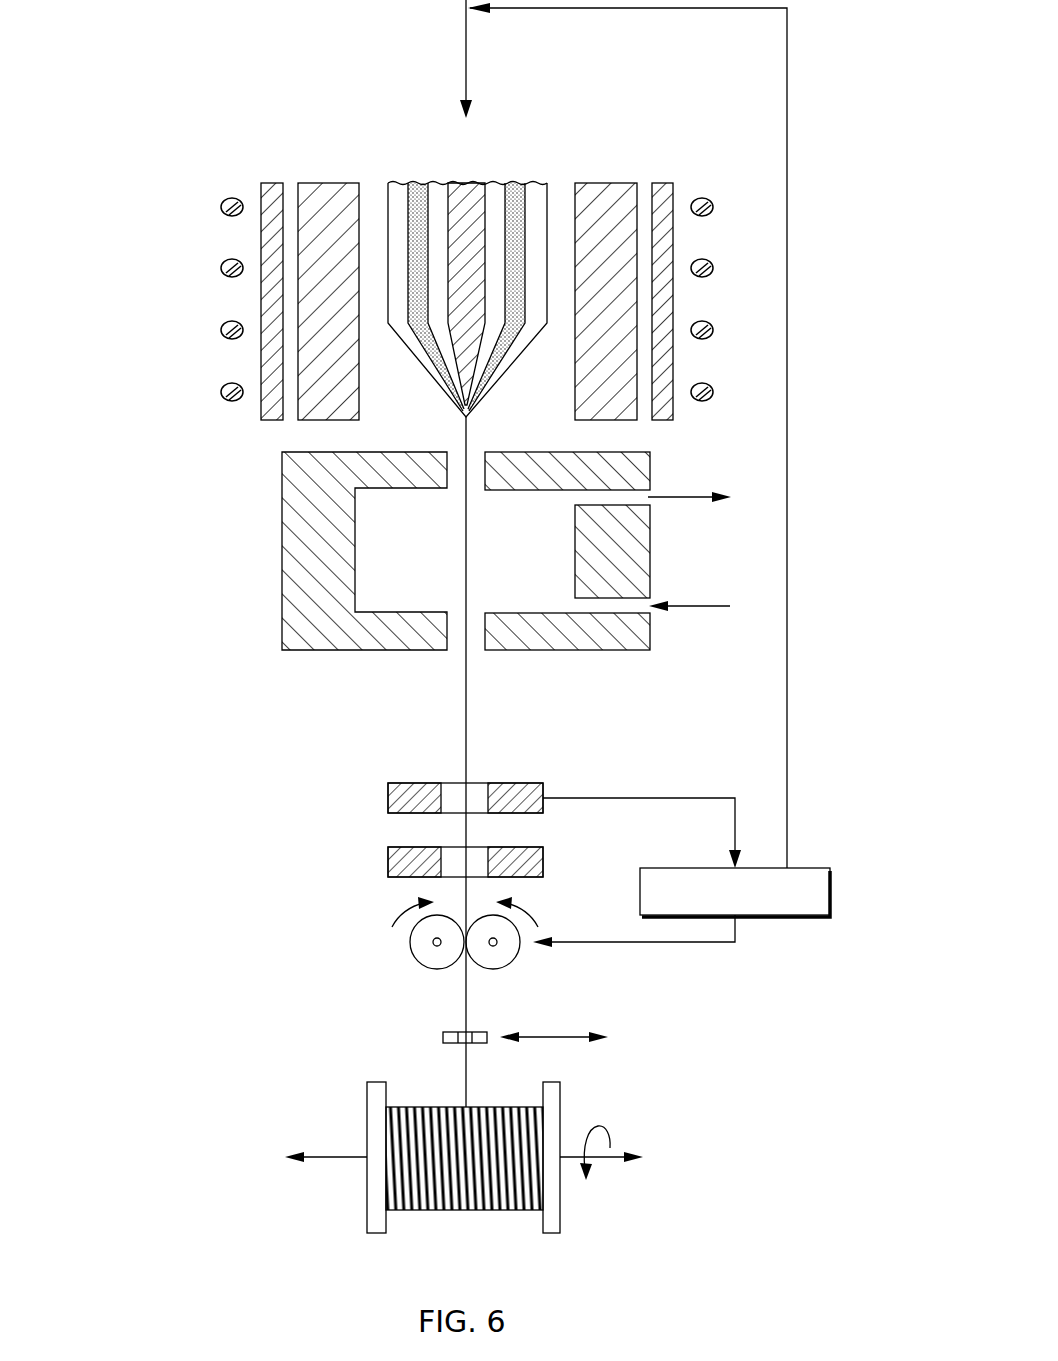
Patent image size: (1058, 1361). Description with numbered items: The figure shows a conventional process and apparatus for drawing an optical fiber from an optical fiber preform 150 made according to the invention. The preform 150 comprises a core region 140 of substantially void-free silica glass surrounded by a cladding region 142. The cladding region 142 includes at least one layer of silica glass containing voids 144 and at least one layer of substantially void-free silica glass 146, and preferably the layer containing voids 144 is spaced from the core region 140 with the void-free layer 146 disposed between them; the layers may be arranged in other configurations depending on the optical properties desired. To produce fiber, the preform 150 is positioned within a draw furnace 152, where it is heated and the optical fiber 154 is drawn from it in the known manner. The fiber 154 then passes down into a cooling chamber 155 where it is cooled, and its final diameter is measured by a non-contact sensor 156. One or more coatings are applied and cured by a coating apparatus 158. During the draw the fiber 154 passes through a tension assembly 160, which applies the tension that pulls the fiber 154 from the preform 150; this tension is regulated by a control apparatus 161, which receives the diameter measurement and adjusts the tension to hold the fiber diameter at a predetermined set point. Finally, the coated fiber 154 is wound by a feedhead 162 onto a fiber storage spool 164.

The core region 140 is at (466, 183).
The cladding region 142 is at (453, 170).
The layer of silica glass containing voids 144 is at (520, 183).
The layer of substantially void-free silica glass 146 is at (505, 183).
The optical fiber preform 150 is at (386, 280).
The draw furnace 152 is at (273, 172).
The optical fiber 154 is at (467, 718).
The cooling chamber 155 is at (282, 545).
The non-contact sensor 156 is at (388, 798).
The coating apparatus 158 is at (388, 861).
The tension assembly 160 is at (410, 950).
The control apparatus 161 is at (790, 917).
The feedhead 162 is at (443, 1037).
The fiber storage spool 164 is at (367, 1127).